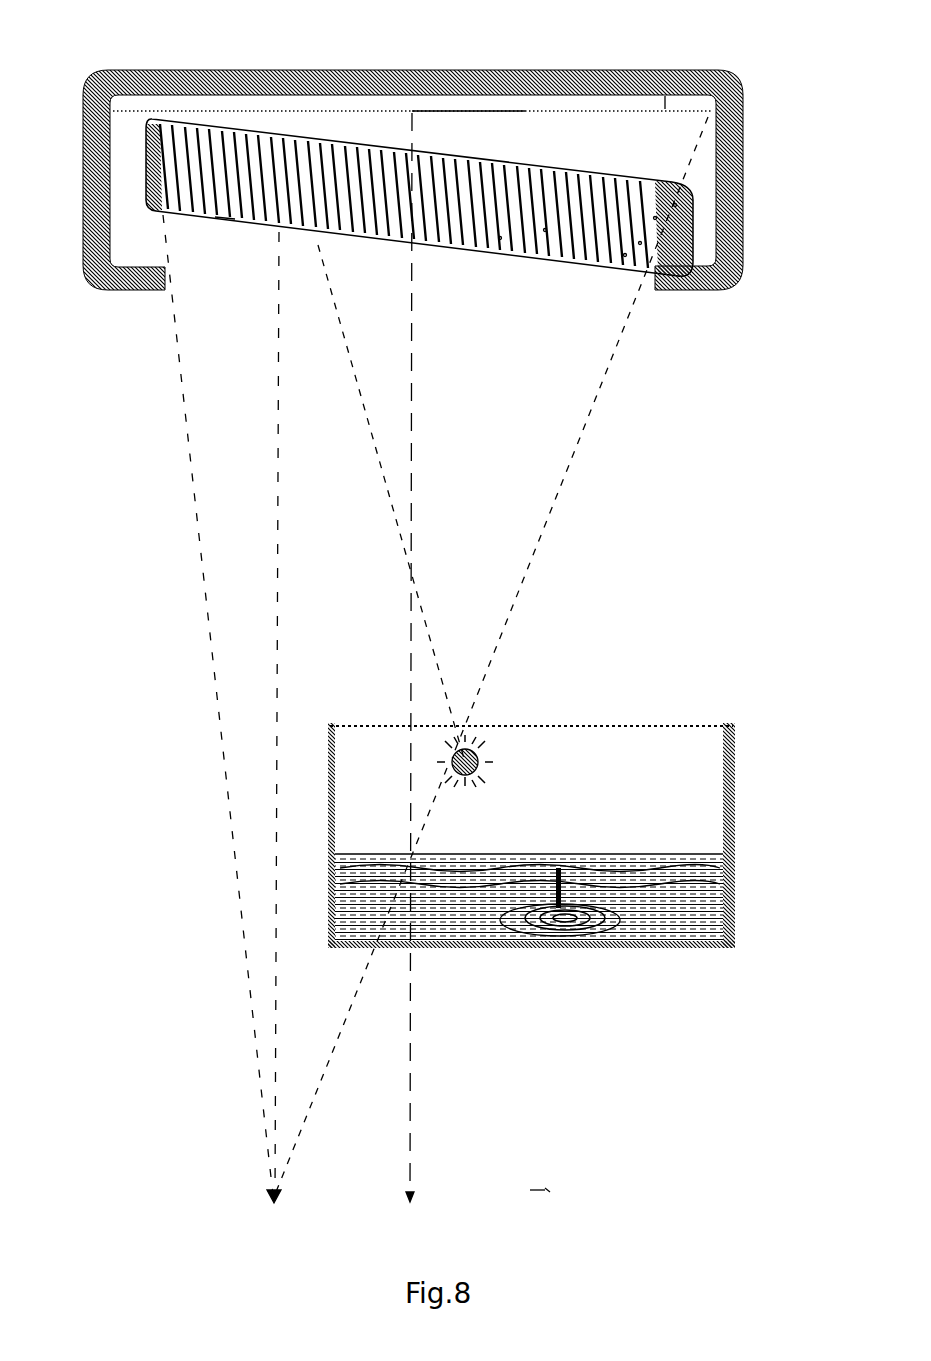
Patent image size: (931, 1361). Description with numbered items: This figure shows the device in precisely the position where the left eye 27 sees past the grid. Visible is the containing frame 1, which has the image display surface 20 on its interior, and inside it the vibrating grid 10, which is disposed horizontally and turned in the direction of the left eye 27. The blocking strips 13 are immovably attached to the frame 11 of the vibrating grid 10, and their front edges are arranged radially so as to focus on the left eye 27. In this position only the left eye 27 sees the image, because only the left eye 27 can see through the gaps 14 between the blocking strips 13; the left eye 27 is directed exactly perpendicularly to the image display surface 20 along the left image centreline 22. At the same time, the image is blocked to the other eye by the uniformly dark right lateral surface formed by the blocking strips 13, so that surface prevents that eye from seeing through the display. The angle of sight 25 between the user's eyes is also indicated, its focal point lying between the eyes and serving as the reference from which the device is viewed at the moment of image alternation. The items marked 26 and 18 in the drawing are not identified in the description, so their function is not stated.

The containing frame 1 is at (103, 80).
The vibrating grid 10 is at (623, 172).
The frame of the vibrating grid 11 is at (223, 218).
The blocking strips 13 is at (640, 243).
The gaps 14 is at (625, 255).
The image display surface 20 is at (395, 113).
The left image centreline 22 is at (273, 640).
The angle of sight 25 is at (412, 1196).
The angle 26 is at (540, 1190).
The left eye 27 is at (281, 1191).
The water surface 18 is at (538, 1196).